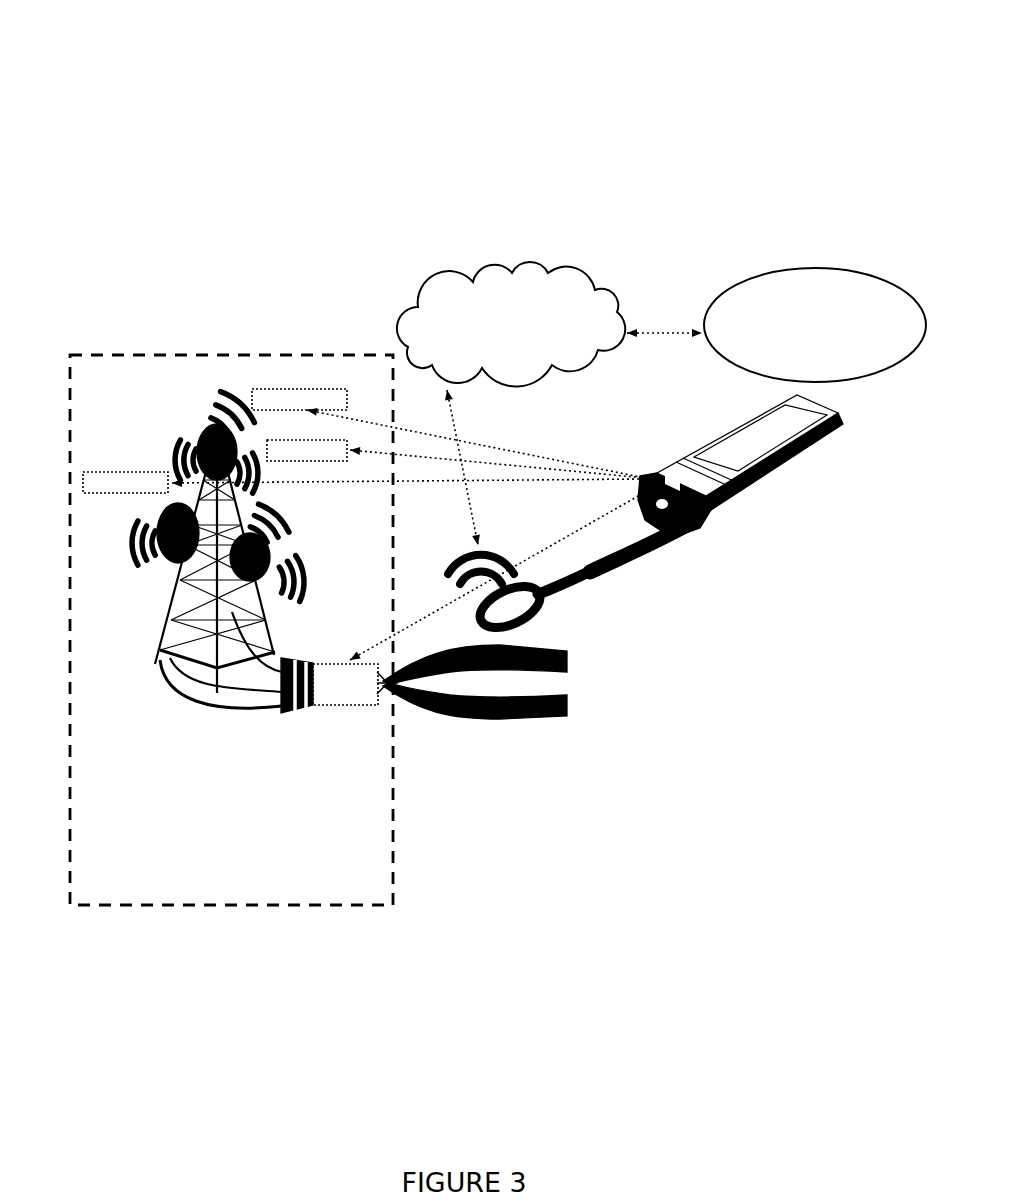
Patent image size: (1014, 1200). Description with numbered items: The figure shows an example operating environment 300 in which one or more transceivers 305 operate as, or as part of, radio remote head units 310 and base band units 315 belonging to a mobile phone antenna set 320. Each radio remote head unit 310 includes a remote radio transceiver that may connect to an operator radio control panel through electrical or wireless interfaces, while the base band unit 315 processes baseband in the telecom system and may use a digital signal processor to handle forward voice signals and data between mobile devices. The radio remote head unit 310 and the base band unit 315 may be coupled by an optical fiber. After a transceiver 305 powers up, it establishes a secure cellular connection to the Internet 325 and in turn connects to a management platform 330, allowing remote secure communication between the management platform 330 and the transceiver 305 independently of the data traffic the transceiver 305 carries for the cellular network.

The operating environment 300 is at (124, 47).
The transceiver 305 is at (778, 481).
The radio remote head unit 310 is at (208, 432).
The base band unit 315 is at (334, 706).
The mobile phone antenna set 320 is at (70, 563).
The Internet 325 is at (511, 324).
The management platform 330 is at (815, 325).